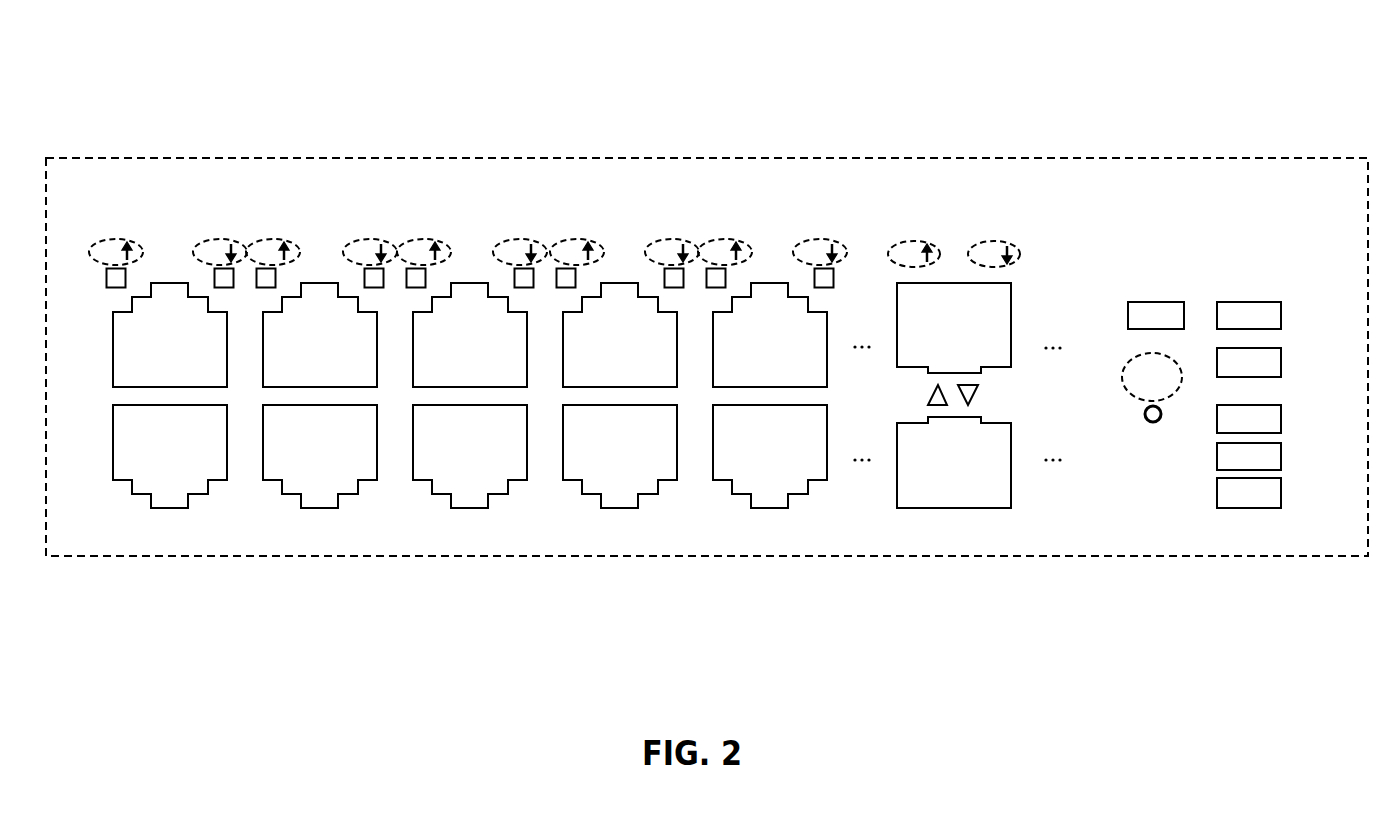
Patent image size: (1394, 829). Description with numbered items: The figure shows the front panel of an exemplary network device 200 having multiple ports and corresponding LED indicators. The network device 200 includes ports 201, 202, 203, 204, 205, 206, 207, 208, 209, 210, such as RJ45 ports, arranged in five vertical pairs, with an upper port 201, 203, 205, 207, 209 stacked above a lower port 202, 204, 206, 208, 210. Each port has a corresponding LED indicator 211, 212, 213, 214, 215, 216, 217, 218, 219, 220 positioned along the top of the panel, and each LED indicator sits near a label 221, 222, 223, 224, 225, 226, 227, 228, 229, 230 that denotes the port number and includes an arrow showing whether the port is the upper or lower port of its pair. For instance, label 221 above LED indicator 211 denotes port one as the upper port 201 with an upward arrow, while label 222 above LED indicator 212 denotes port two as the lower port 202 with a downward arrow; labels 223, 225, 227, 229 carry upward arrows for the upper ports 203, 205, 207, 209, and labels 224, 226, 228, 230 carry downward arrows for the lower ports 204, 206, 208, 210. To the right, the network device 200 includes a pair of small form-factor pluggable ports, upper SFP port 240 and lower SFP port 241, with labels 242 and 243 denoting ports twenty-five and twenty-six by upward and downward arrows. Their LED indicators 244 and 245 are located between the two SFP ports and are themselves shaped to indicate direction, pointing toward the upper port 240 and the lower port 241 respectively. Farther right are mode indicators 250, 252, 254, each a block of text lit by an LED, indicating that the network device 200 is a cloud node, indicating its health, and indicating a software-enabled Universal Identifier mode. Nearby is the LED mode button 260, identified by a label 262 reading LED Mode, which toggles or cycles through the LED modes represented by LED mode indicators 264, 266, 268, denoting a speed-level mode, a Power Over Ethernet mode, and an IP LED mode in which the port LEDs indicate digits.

The network device 200 is at (1290, 78).
The port 201 is at (170, 335).
The port 202 is at (170, 456).
The port 203 is at (320, 335).
The port 204 is at (320, 456).
The port 205 is at (470, 335).
The port 206 is at (470, 456).
The port 207 is at (620, 335).
The port 208 is at (620, 456).
The port 209 is at (770, 335).
The port 210 is at (770, 456).
The LED indicator 211 is at (106, 278).
The LED indicator 212 is at (214, 278).
The LED indicator 213 is at (276, 280).
The LED indicator 214 is at (364, 278).
The LED indicator 215 is at (426, 280).
The LED indicator 216 is at (514, 278).
The LED indicator 217 is at (576, 280).
The LED indicator 218 is at (664, 278).
The LED indicator 219 is at (726, 280).
The LED indicator 220 is at (834, 280).
The label 221 is at (116, 239).
The label 222 is at (220, 239).
The label 223 is at (273, 239).
The label 224 is at (370, 239).
The label 225 is at (424, 239).
The label 226 is at (520, 239).
The label 227 is at (577, 239).
The label 228 is at (672, 239).
The label 229 is at (725, 239).
The label 230 is at (820, 239).
The SFP port 240 is at (954, 328).
The SFP port 241 is at (954, 462).
The label 242 is at (915, 241).
The label 243 is at (995, 241).
The LED indicator 244 is at (928, 396).
The LED indicator 245 is at (974, 392).
The mode indicator 250 is at (1128, 315).
The mode indicator 252 is at (1281, 315).
The mode indicator 254 is at (1281, 362).
The LED mode button 260 is at (1145, 414).
The label 262 is at (1122, 379).
The LED mode indicator 264 is at (1281, 419).
The LED mode indicator 266 is at (1281, 456).
The LED mode indicator 268 is at (1281, 493).